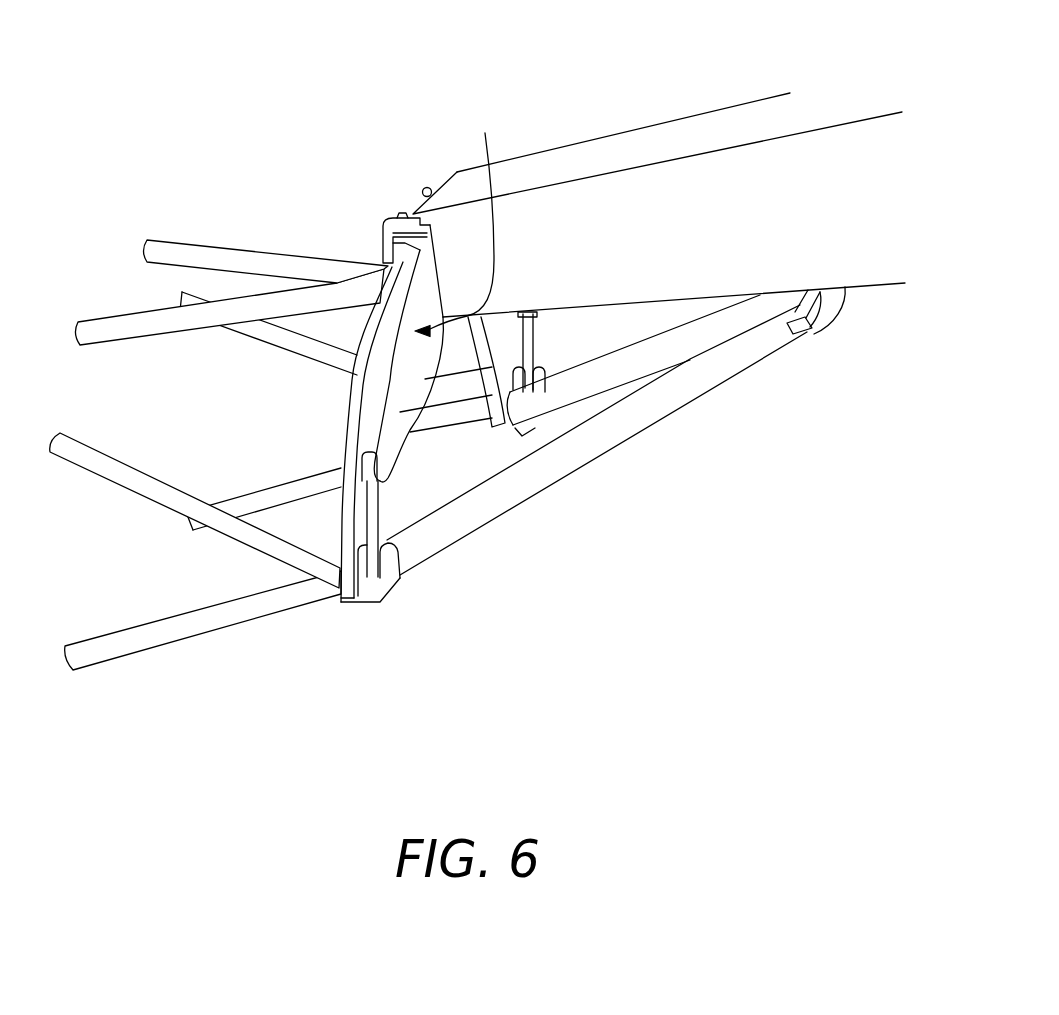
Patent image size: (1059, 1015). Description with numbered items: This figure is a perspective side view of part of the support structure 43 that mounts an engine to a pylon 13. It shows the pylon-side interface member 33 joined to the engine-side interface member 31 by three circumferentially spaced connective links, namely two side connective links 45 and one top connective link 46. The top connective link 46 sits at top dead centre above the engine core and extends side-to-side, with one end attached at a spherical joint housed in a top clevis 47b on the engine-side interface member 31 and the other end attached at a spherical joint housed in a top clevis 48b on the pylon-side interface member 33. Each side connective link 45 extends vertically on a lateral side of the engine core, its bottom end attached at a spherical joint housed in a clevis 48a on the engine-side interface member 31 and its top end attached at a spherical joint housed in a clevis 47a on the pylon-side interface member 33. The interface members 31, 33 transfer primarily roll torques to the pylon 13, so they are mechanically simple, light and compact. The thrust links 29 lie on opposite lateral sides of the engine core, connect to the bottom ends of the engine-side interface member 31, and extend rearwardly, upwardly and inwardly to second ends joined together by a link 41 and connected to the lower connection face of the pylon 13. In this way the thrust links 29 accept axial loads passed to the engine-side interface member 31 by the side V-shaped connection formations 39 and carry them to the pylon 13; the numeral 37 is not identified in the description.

The pylon 13 is at (688, 140).
The thrust links 29 is at (687, 406).
The engine-side interface member 31 is at (343, 603).
The pylon-side interface member 33 is at (456, 222).
The rod 37 is at (275, 238).
The side V-shaped connection formations 39 is at (246, 370).
The link 41 is at (833, 301).
The support structure 43 is at (92, 280).
The side connective links 45 is at (395, 509).
The top connective link 46 is at (413, 213).
The clevis 47a is at (373, 628).
The top clevis 47b is at (426, 187).
The clevis 48a is at (393, 443).
The top clevis 48b is at (397, 214).